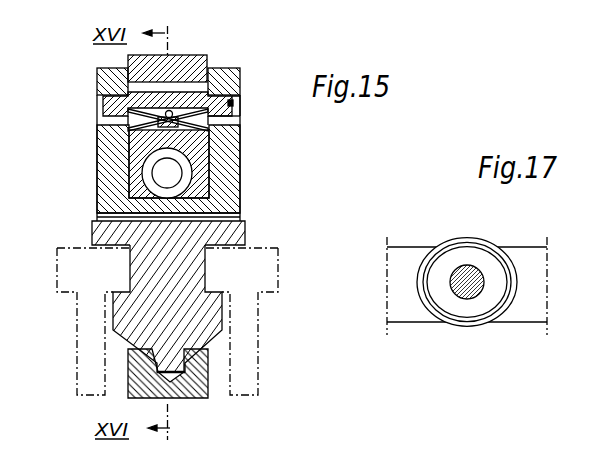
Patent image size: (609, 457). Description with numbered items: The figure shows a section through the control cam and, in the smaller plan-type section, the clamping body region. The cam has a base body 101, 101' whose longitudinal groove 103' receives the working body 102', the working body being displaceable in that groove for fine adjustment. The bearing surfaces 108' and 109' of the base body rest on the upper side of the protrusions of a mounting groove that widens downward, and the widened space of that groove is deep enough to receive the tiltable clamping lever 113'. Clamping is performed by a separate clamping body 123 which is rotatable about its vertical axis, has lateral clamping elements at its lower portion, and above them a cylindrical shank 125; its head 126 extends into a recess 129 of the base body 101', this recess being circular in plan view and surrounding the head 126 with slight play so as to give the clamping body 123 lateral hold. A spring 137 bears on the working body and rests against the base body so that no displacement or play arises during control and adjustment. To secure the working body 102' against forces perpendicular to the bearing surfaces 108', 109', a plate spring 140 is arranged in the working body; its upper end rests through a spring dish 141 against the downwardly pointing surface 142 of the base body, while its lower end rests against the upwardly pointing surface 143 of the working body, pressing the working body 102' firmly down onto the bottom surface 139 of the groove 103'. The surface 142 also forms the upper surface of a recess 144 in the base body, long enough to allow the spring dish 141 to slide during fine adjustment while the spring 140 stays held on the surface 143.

In FIG. 17, the base body 101 is at (455, 260).
In FIG. 15, the base body 101' is at (139, 169).
In FIG. 17, the base body 101' is at (467, 278).
In FIG. 15, the working body 102' is at (186, 56).
In FIG. 15, the longitudinal groove 103' is at (216, 164).
In FIG. 15, the bearing surface 108' is at (241, 321).
In FIG. 15, the bearing surface 109' is at (93, 321).
In FIG. 15, the clamping lever 113' is at (192, 393).
In FIG. 15, the clamping body 123 is at (166, 324).
In FIG. 17, the cylindrical shank 125 is at (460, 293).
In FIG. 17, the head 126 is at (467, 250).
In FIG. 17, the recess 129 is at (507, 253).
In FIG. 15, the spring 137 is at (168, 195).
In FIG. 15, the bottom surface 139 is at (240, 208).
In FIG. 15, the spring 140 is at (128, 121).
In FIG. 15, the spring dish 141 is at (242, 117).
In FIG. 15, the downwardly pointing surface 142 is at (97, 72).
In FIG. 15, the upwardly pointing surface 143 is at (148, 141).
In FIG. 15, the recess 144 is at (100, 105).